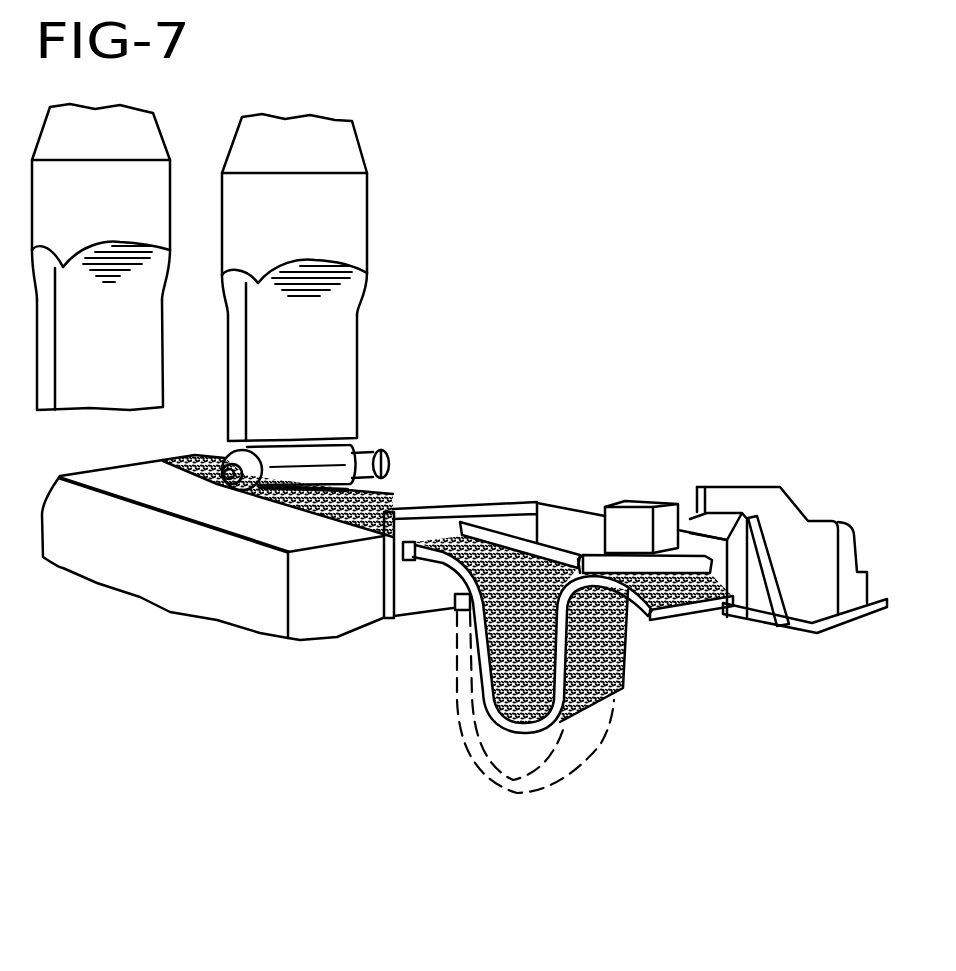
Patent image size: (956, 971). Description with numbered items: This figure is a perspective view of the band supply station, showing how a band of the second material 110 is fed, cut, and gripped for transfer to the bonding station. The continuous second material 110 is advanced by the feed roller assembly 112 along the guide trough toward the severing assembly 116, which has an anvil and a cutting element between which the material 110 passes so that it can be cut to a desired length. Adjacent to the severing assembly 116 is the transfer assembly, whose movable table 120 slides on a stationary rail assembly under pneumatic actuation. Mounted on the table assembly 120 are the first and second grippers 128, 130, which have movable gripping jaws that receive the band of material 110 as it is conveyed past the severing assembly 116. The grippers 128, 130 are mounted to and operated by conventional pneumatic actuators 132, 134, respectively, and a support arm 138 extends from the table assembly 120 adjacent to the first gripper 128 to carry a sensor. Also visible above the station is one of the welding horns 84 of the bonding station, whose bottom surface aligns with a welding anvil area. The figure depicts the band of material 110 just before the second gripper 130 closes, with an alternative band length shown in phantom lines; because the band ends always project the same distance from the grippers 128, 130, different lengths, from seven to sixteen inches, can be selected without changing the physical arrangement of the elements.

The welding horn 84 is at (343, 345).
The second material 110 is at (157, 439).
The feed roller assembly 112 is at (323, 448).
The severing assembly 116 is at (427, 528).
The movable table 120 is at (877, 615).
The first gripper 128 is at (663, 563).
The second gripper 130 is at (577, 535).
The pneumatic actuator 132 is at (745, 557).
The pneumatic actuator 134 is at (631, 507).
The support arm 138 is at (727, 495).